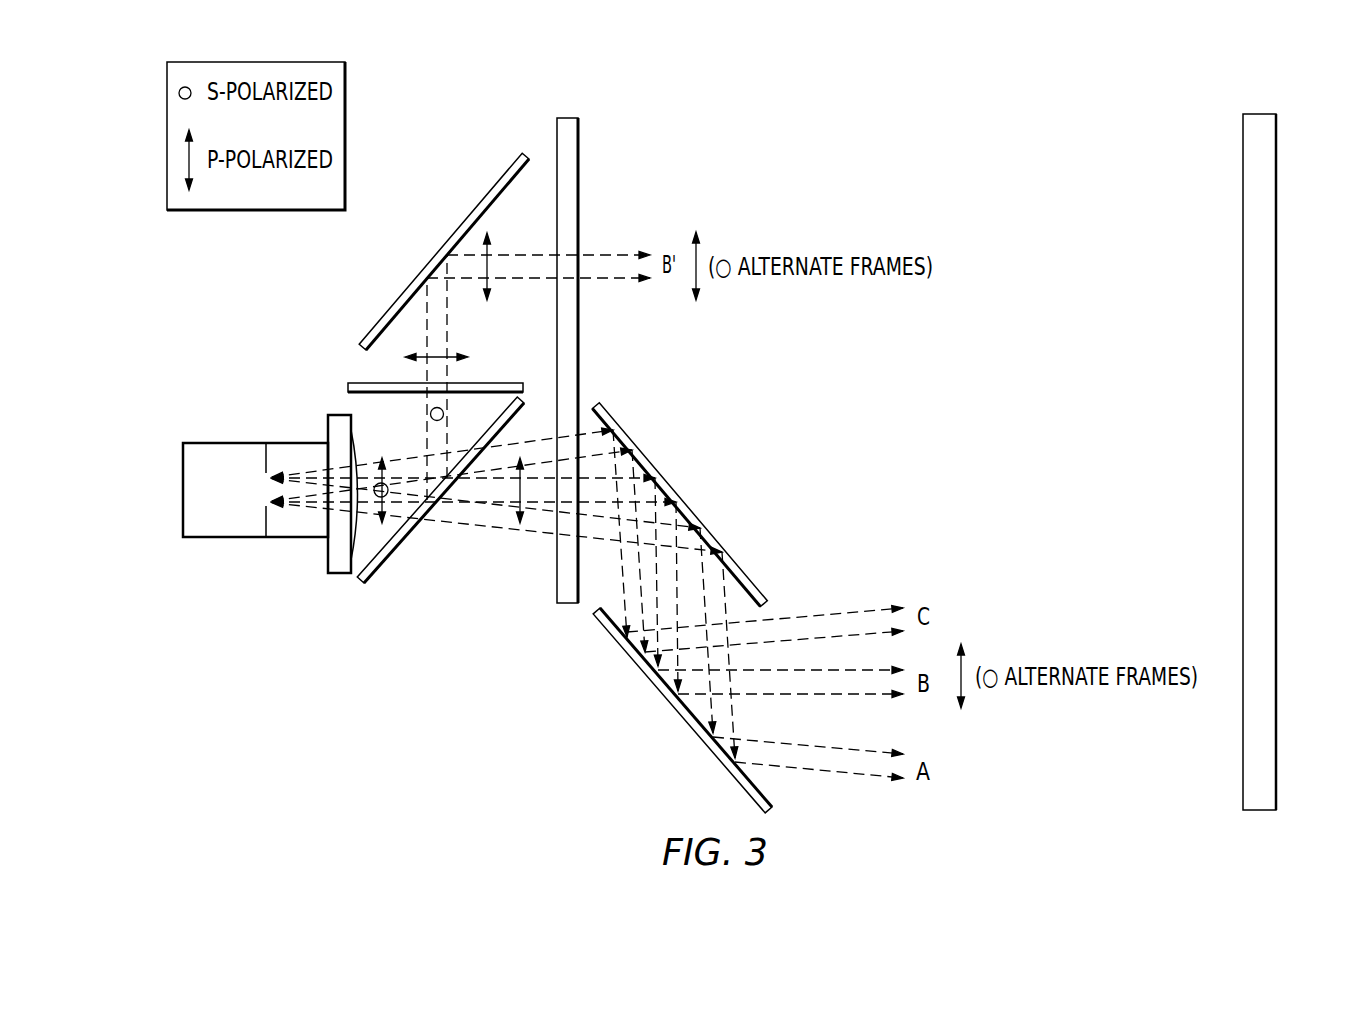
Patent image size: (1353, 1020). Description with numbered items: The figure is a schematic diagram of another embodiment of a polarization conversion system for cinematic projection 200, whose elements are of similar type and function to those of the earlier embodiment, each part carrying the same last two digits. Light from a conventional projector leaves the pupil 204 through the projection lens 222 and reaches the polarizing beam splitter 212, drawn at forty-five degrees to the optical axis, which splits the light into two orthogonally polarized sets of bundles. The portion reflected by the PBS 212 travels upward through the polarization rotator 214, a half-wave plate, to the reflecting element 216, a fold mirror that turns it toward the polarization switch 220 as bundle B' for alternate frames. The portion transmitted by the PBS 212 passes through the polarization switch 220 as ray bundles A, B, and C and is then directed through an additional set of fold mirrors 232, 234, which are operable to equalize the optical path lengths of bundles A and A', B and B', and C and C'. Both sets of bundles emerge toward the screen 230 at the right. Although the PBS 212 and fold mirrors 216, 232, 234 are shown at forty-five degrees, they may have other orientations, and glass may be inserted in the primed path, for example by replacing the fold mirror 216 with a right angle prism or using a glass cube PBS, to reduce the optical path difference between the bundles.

The polarization conversion system 200 is at (805, 93).
The pupil 204 is at (262, 503).
The polarizing beam splitter 212 is at (376, 574).
The polarization rotator 214 is at (350, 382).
The reflecting element 216 is at (468, 215).
The polarization switch 220 is at (566, 118).
The projection lens 222 is at (360, 543).
The screen 230 is at (1278, 455).
The fold mirror 232 is at (694, 505).
The fold mirror 234 is at (677, 704).